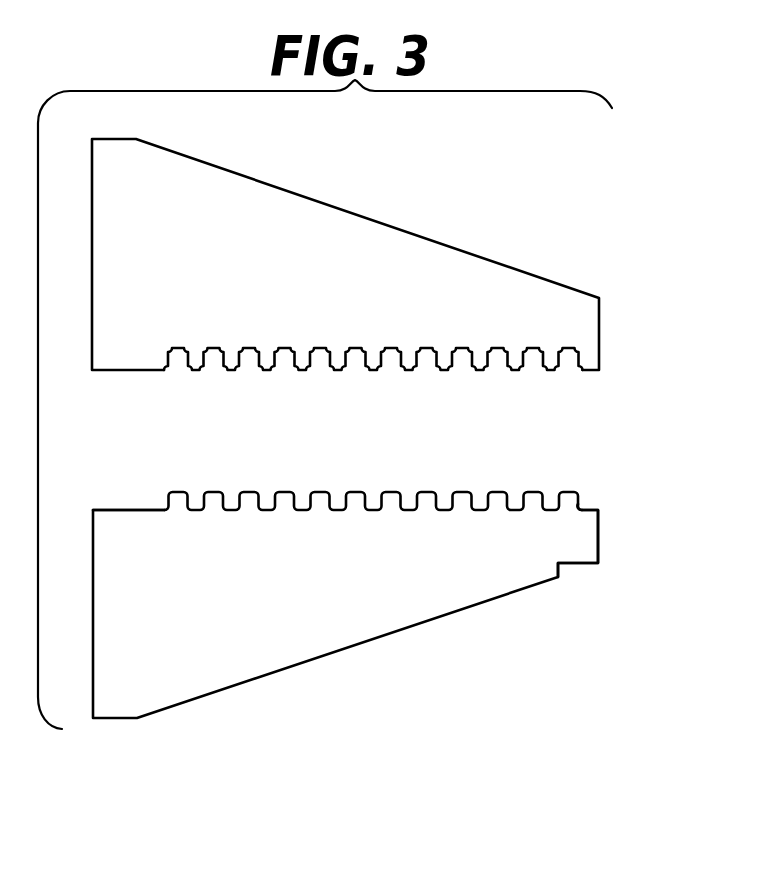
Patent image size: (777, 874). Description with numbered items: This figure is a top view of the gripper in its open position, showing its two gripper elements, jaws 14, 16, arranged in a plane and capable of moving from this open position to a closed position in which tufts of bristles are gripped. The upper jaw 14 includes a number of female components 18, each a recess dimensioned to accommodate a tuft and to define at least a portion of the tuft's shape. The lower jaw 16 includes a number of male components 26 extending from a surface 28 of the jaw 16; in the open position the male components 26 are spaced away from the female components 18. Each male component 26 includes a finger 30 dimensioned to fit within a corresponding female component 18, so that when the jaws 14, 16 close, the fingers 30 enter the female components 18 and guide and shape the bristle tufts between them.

The jaw 14 is at (345, 292).
The jaw 16 is at (379, 566).
The female component 18 is at (497, 354).
The male component 26 is at (532, 493).
The surface 28 is at (140, 510).
The finger 30 is at (579, 496).